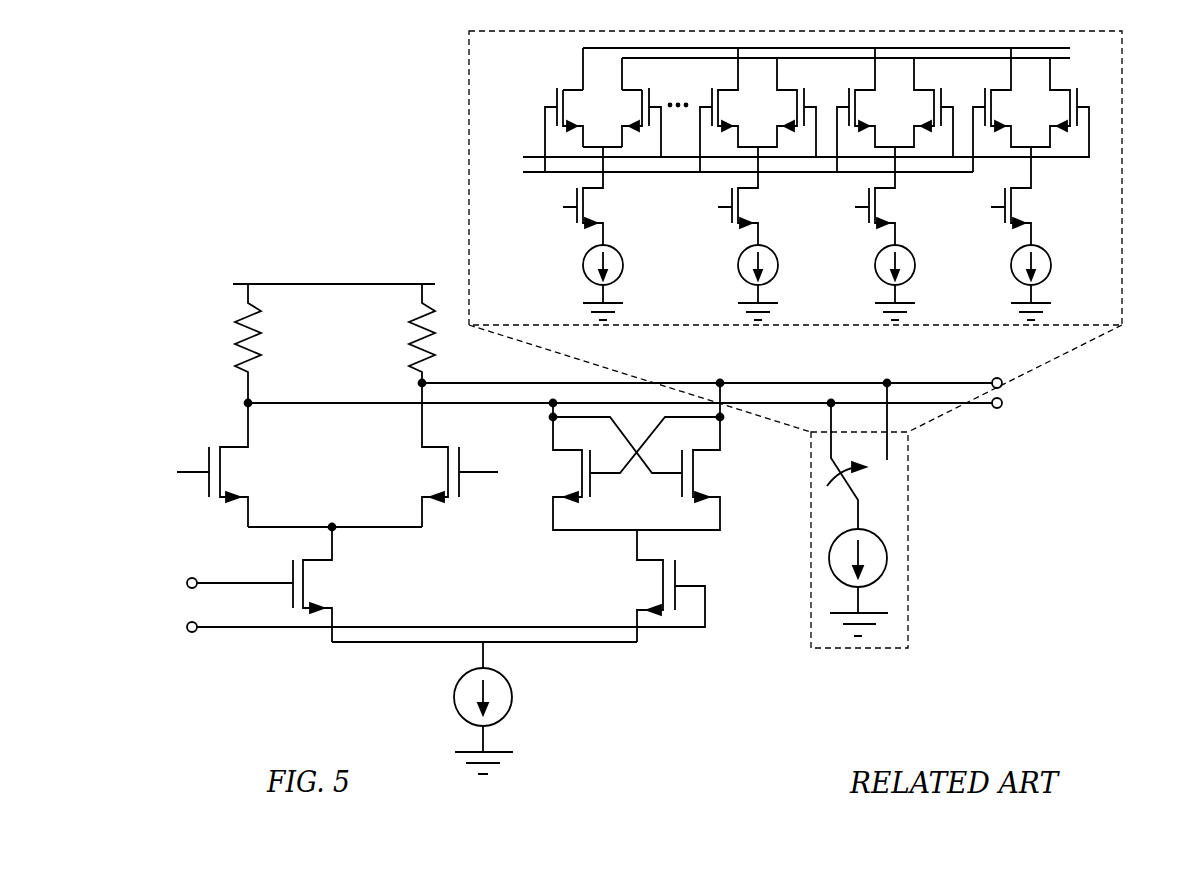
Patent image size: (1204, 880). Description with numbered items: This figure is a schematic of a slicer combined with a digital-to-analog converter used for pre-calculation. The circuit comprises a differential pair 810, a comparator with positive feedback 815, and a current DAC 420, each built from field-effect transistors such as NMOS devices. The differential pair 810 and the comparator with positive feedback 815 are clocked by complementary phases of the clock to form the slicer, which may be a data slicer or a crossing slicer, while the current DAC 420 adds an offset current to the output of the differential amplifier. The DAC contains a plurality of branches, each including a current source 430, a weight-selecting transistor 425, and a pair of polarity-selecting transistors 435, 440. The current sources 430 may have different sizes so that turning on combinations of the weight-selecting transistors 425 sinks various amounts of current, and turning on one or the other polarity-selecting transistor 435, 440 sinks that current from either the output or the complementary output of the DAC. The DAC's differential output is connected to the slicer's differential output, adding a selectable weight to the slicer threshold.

The current DAC 420 is at (836, 339).
The weight-selecting transistor 425 is at (595, 206).
The current source 430 is at (623, 262).
The polarity-selecting transistor 435 is at (556, 86).
The polarity-selecting transistor 440 is at (657, 97).
The differential pair 810 is at (448, 265).
The comparator with positive feedback 815 is at (742, 658).